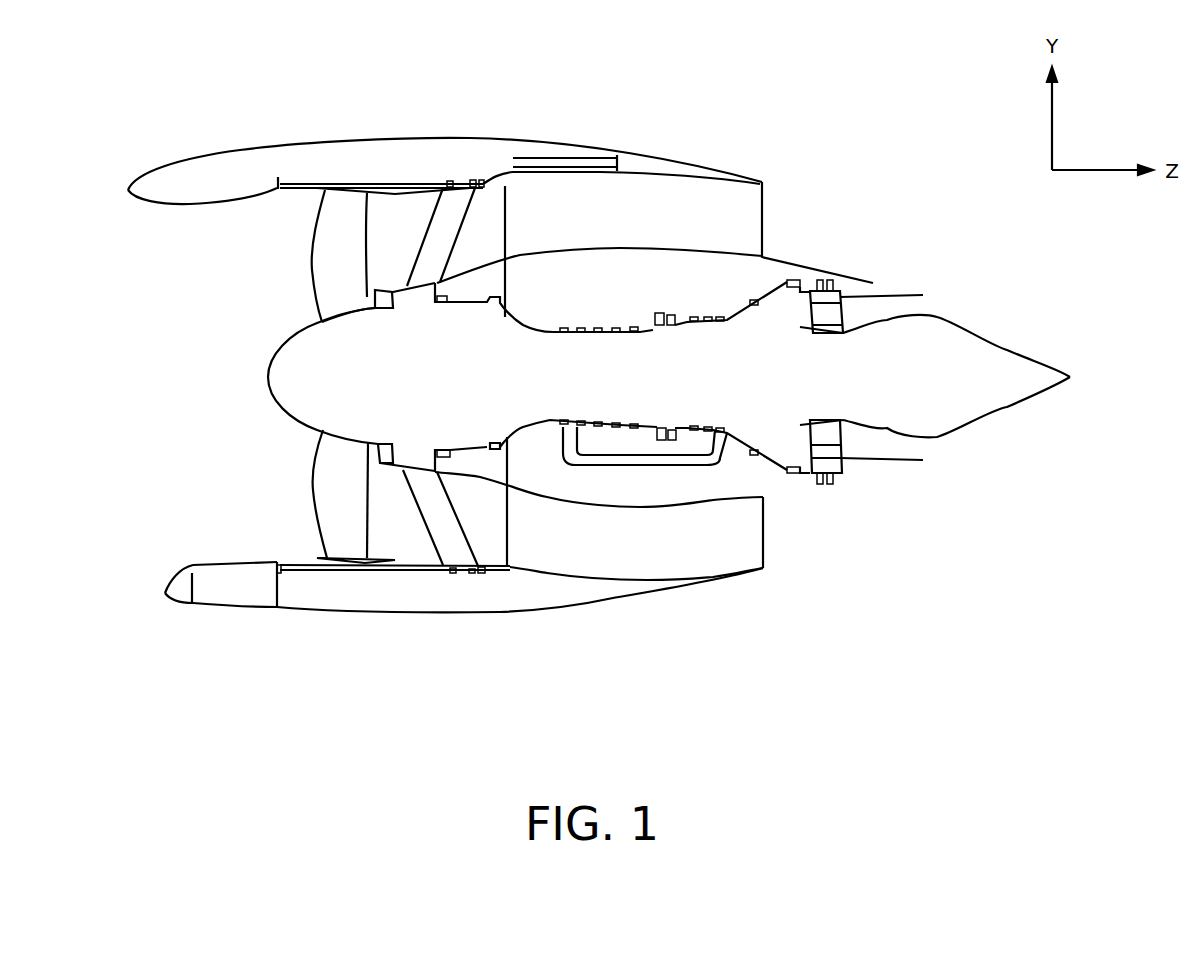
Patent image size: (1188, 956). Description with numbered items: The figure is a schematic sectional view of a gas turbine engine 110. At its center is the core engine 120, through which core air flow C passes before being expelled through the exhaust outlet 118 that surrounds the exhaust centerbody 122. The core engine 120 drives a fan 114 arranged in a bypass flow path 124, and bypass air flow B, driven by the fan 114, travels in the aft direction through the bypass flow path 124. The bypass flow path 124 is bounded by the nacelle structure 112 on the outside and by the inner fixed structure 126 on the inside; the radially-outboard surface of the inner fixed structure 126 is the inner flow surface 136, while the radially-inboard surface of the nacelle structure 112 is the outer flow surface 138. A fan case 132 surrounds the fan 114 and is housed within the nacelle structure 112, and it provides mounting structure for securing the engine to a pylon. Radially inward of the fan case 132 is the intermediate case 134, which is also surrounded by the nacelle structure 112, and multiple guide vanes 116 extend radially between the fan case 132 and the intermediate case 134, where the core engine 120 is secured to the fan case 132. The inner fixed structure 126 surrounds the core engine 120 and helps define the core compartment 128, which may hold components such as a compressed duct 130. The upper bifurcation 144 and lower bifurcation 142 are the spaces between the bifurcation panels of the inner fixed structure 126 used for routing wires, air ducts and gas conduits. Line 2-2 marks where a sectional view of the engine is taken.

The gas turbine engine 110 is at (767, 102).
The nacelle structure 112 is at (313, 143).
The fan 114 is at (323, 488).
The guide vanes 116 is at (447, 530).
The exhaust outlet 118 is at (920, 305).
The core engine 120 is at (647, 320).
The exhaust centerbody 122 is at (962, 409).
The bypass flow path 124 is at (629, 547).
The inner fixed structure 126 is at (641, 246).
The core compartment 128 is at (629, 498).
The compressed duct 130 is at (727, 465).
The fan case 132 is at (305, 572).
The intermediate case 134 is at (507, 472).
The inner flow surface 136 is at (552, 497).
The outer flow surface 138 is at (567, 573).
The lower bifurcation 142 is at (740, 555).
The upper bifurcation 144 is at (752, 203).
The line 2- 2 is at (565, 137).
The bypass air flow B is at (278, 244).
The core air flow C is at (358, 297).